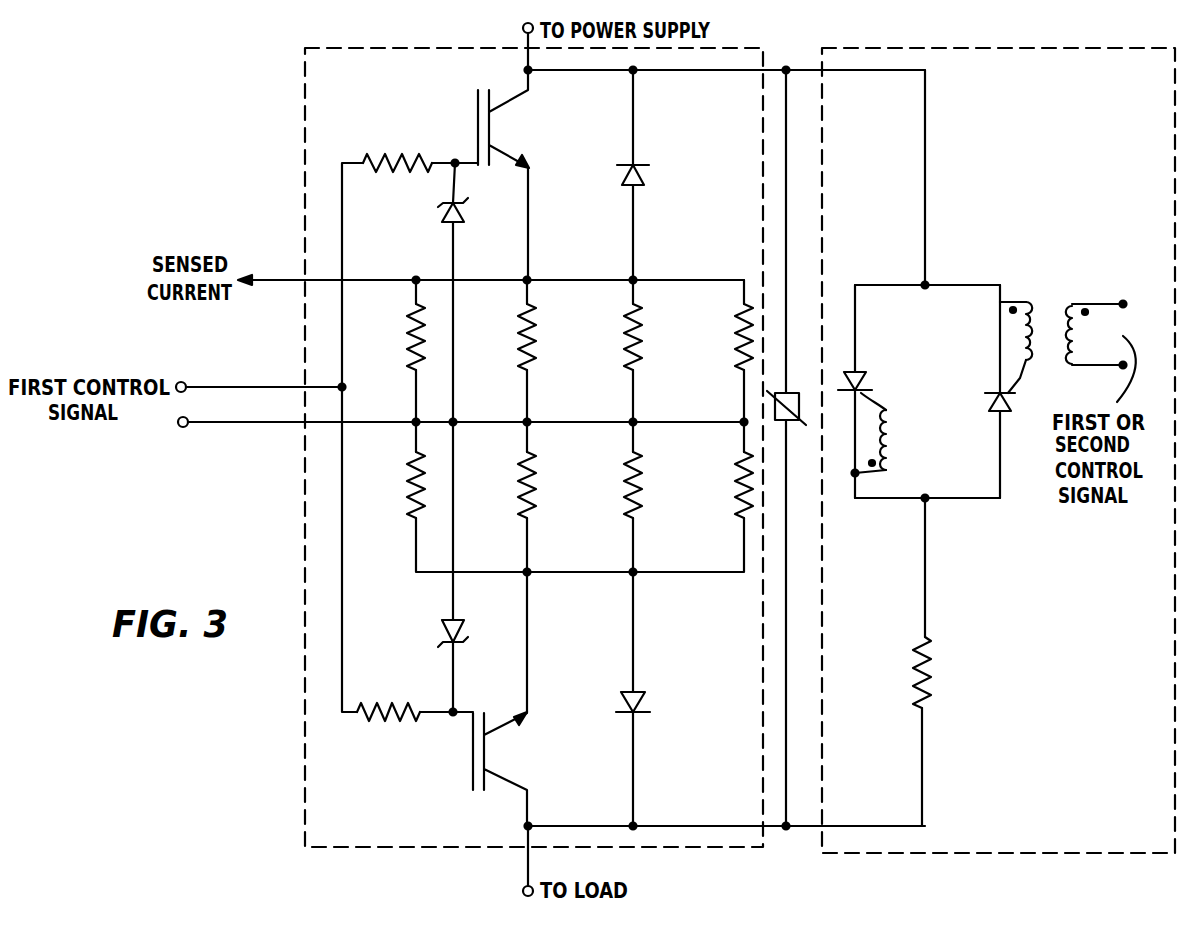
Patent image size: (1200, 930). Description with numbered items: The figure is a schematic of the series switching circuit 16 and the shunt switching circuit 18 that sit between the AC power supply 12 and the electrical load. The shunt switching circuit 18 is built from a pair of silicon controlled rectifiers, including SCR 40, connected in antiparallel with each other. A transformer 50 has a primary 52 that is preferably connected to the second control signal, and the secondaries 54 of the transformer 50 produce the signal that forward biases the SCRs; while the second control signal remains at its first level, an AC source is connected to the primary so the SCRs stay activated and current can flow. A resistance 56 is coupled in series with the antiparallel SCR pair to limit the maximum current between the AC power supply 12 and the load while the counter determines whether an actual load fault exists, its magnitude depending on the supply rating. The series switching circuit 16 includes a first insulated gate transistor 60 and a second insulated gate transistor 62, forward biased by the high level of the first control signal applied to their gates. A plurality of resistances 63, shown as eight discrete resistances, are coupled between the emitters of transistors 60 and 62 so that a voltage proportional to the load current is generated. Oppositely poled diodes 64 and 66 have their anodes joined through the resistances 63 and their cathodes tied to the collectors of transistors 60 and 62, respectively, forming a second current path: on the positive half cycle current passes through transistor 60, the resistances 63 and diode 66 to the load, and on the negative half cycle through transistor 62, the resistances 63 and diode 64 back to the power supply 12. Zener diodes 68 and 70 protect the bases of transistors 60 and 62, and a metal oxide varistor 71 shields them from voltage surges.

The AC power supply 12 is at (986, 397).
The series switching circuit 16 is at (301, 226).
The shunt switching circuit 18 is at (983, 862).
The silicon controlled rectifier 40 is at (862, 382).
The transformer 50 is at (1048, 290).
The primary winding 52 is at (1098, 302).
The secondaries 54 is at (892, 450).
The resistance 56 is at (926, 666).
The first insulated gate transistor 60 is at (477, 121).
The second insulated gate transistor 62 is at (472, 750).
The resistances 63 is at (520, 487).
The diode 64 is at (646, 176).
The diode 66 is at (641, 702).
The zener diode 68 is at (446, 214).
The zener diode 70 is at (440, 635).
The metal oxide varistor 71 is at (797, 427).